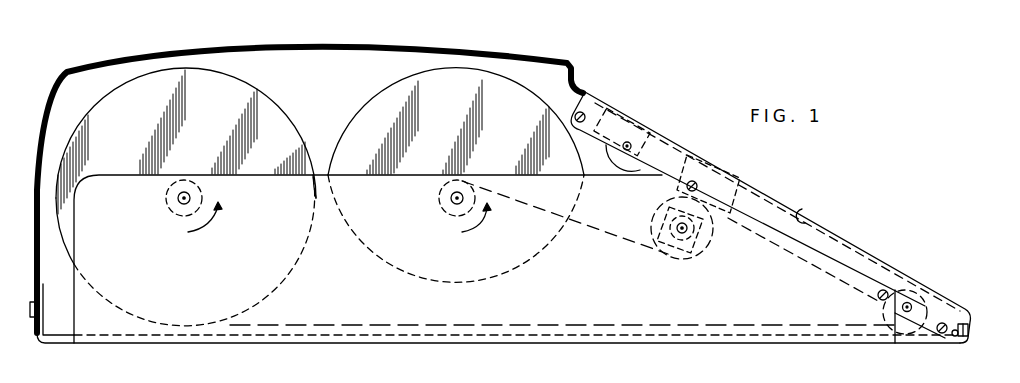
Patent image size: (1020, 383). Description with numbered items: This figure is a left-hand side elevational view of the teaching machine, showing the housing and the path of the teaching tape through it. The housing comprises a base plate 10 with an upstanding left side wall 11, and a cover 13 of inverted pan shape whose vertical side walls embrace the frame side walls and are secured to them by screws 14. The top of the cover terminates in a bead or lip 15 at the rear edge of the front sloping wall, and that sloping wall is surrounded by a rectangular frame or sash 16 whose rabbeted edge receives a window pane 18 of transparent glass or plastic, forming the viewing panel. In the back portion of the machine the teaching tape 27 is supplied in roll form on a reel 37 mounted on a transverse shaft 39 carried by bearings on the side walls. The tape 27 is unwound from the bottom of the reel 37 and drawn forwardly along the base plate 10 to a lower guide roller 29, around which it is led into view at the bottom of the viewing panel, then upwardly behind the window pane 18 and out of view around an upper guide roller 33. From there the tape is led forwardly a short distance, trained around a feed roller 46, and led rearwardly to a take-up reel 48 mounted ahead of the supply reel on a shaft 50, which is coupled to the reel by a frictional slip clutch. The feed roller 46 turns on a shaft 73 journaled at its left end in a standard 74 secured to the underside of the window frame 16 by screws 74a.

The base plate 10 is at (448, 344).
The left side wall 11 is at (352, 192).
The cover 13 is at (414, 47).
The screws 14 is at (31, 311).
The bead or lip 15 is at (586, 94).
The frame or sash 16 is at (840, 248).
The window pane 18 is at (797, 212).
The teaching tape 27 is at (683, 325).
The guide roller 29 is at (922, 290).
The guide roller 33 is at (645, 132).
The reel 37 is at (262, 96).
The transverse shaft 39 is at (178, 198).
The feed roller 46 is at (703, 252).
The take-up reel 48 is at (507, 82).
The shaft 50 is at (452, 199).
The shaft 73 is at (680, 232).
The left standard 74 is at (640, 246).
The screws 74a is at (704, 154).